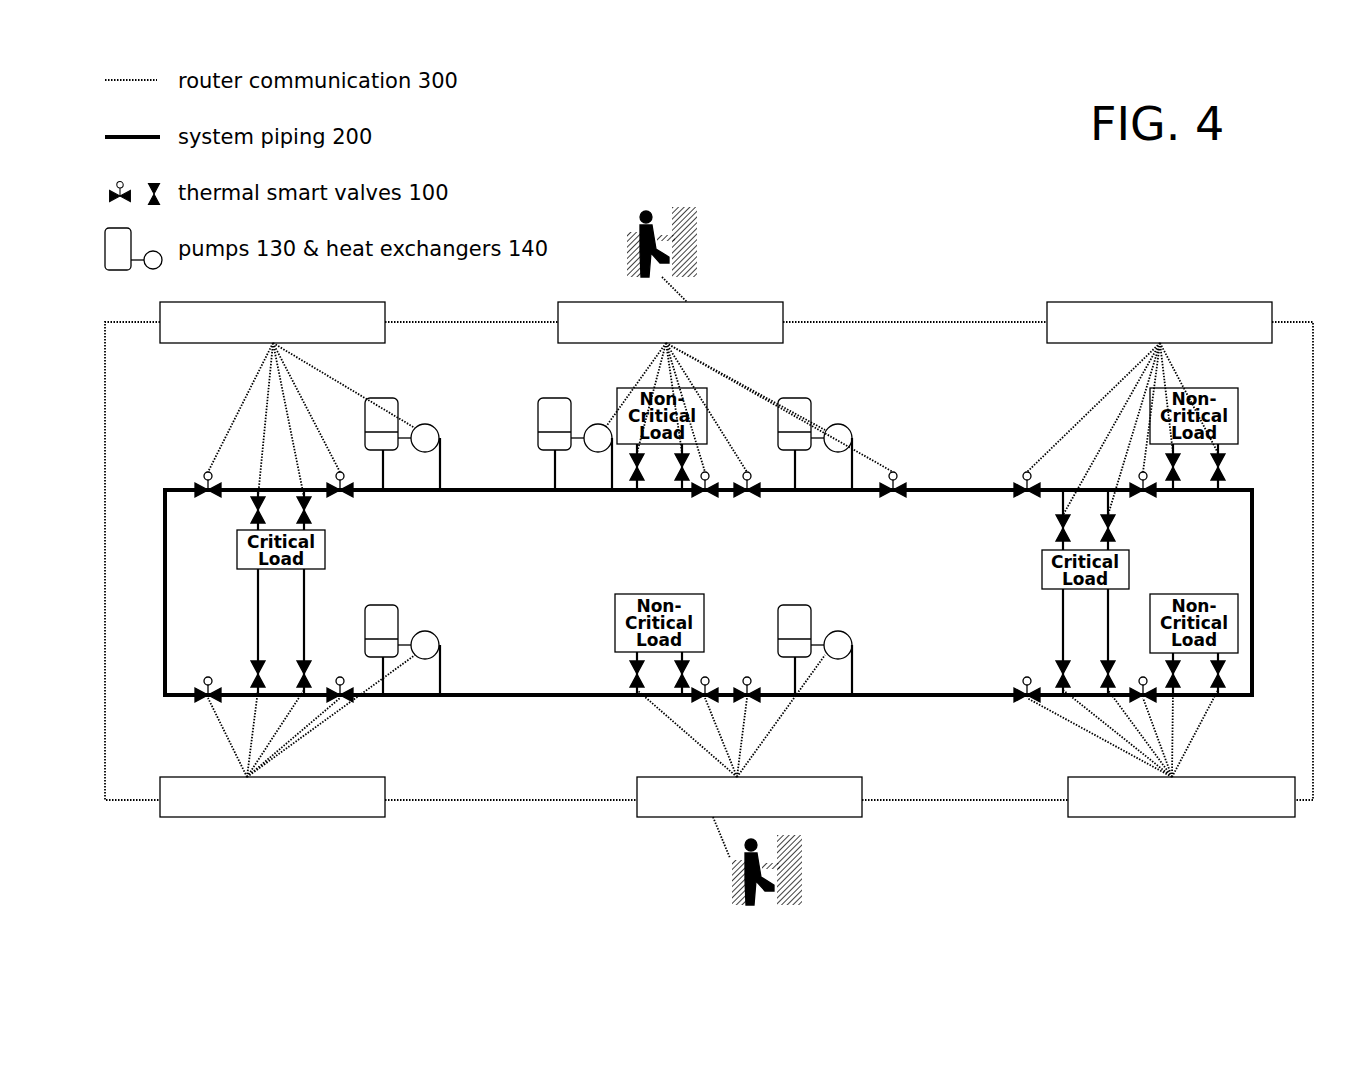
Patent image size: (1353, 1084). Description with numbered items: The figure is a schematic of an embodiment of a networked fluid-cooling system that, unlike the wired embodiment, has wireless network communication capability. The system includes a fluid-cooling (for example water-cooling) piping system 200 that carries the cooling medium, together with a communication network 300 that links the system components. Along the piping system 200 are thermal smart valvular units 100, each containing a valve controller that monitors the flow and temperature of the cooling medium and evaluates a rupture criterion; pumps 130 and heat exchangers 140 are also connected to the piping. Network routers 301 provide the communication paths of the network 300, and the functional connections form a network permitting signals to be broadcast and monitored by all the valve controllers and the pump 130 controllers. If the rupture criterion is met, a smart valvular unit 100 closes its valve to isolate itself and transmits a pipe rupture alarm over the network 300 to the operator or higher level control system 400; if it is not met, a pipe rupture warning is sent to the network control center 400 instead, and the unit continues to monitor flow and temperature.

The thermal smart valvular unit 100 is at (200, 473).
The pump 130 is at (875, 600).
The operator console 140 is at (380, 600).
The piping system 200 is at (969, 495).
The communication network 300 is at (1000, 325).
The network router 301 is at (727, 559).
The network control center 400 is at (842, 556).